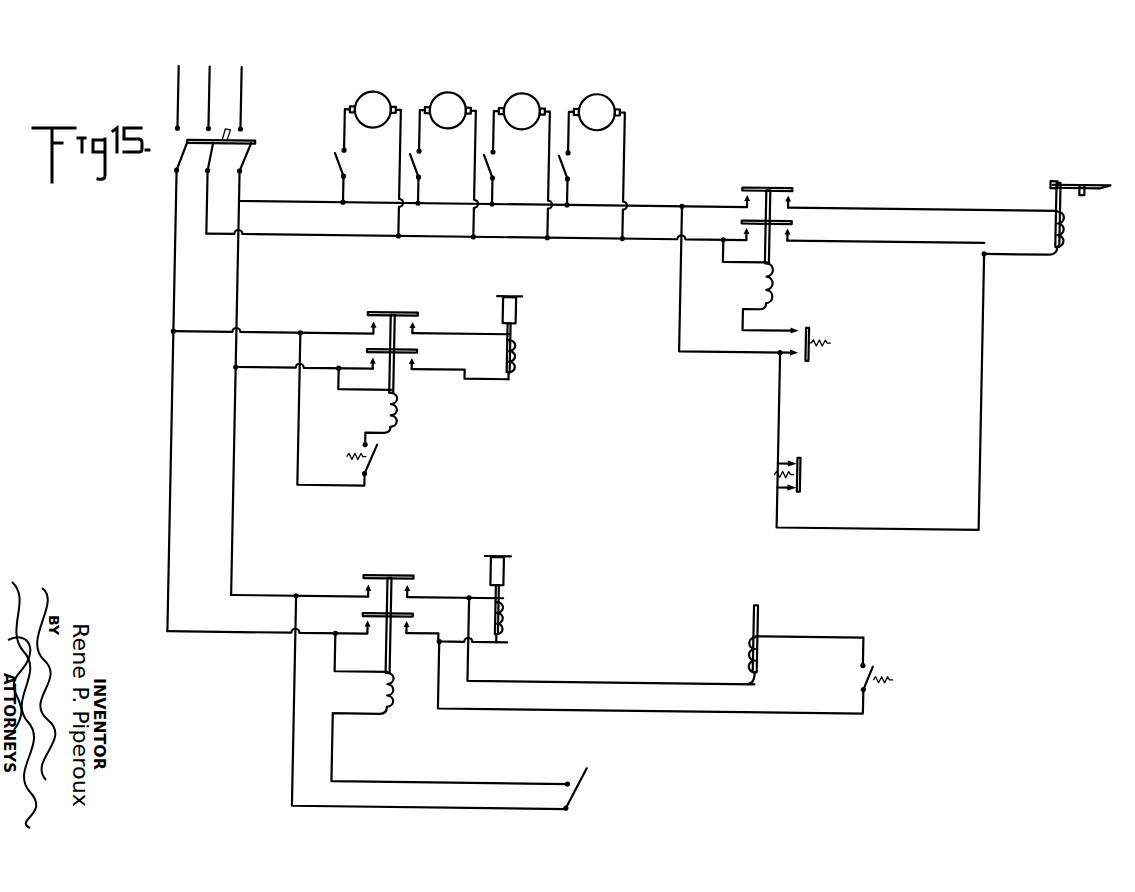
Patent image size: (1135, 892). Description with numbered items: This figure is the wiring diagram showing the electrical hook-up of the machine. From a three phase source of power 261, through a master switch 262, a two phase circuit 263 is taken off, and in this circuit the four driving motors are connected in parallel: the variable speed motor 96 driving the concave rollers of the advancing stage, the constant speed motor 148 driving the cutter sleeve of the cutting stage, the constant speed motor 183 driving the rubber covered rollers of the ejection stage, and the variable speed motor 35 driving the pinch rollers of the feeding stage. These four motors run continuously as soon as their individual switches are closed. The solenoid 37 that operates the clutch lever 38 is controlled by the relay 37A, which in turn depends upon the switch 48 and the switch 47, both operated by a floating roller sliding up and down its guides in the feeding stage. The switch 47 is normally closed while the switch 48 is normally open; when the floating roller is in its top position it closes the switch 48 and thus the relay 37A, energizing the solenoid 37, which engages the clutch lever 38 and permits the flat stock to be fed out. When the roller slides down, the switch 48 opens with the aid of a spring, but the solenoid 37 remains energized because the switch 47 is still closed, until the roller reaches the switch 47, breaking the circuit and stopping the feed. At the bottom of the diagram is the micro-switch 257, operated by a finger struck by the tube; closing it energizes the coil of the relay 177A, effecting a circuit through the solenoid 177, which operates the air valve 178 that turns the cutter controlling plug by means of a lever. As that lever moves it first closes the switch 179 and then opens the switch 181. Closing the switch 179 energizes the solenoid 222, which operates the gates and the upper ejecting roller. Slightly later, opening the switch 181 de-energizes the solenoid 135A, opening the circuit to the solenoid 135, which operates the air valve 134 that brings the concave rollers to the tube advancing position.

The three phase source of power 261 is at (240, 104).
The master switch 262 is at (245, 141).
The two phase circuit 263 is at (301, 203).
The variable speed motor 96 is at (373, 100).
The constant speed motor 148 is at (447, 101).
The constant speed motor 183 is at (521, 99).
The variable speed motor 35 is at (597, 99).
The clutch lever 38 is at (1068, 172).
The solenoid 37 is at (1064, 218).
The relay 37A is at (777, 275).
The switch 48 is at (813, 330).
The switch 47 is at (808, 459).
The air valve 134 is at (521, 304).
The solenoid 135 is at (521, 345).
The solenoid 135A is at (403, 405).
The switch 181 is at (385, 452).
The air valve 178 is at (522, 567).
The solenoid 177 is at (522, 617).
The relay 177A is at (404, 689).
The solenoid 222 is at (769, 615).
The switch 179 is at (891, 659).
The micro-switch 257 is at (599, 774).